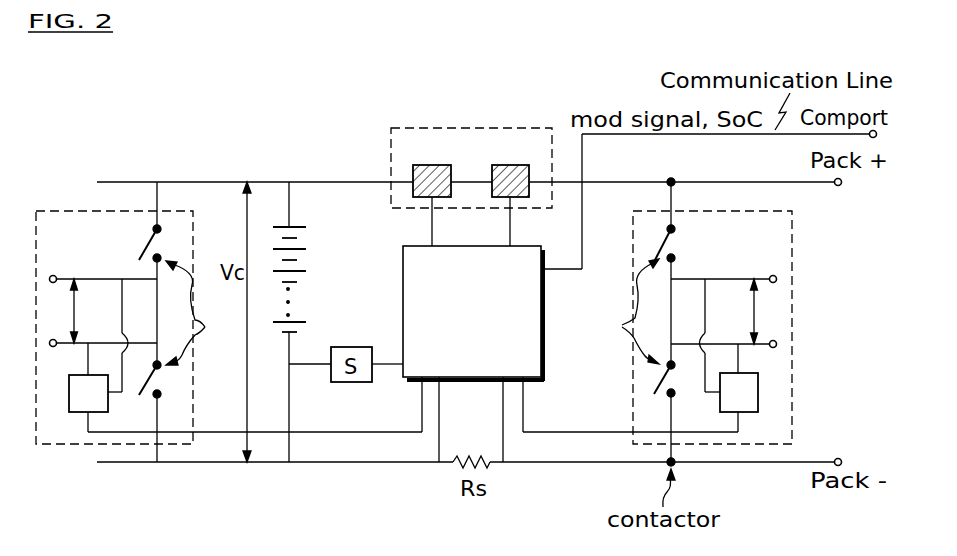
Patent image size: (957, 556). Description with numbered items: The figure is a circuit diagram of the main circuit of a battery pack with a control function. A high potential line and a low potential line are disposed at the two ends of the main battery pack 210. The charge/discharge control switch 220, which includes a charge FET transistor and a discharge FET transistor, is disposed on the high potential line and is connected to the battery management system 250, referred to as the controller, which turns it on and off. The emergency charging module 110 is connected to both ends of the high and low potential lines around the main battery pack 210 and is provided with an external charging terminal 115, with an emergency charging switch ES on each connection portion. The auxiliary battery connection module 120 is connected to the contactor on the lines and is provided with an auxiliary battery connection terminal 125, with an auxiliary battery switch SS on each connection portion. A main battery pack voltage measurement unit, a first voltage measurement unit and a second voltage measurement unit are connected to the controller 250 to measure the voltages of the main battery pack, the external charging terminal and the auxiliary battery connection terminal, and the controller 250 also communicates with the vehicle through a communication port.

The emergency charging module 110 is at (134, 316).
The external charging terminal 115 is at (62, 268).
The auxiliary battery connection module 120 is at (718, 322).
The auxiliary battery connection terminal 125 is at (763, 268).
The main battery pack 210 is at (311, 223).
The charge/discharge control switch 220 is at (512, 128).
The battery management system 250 is at (470, 382).